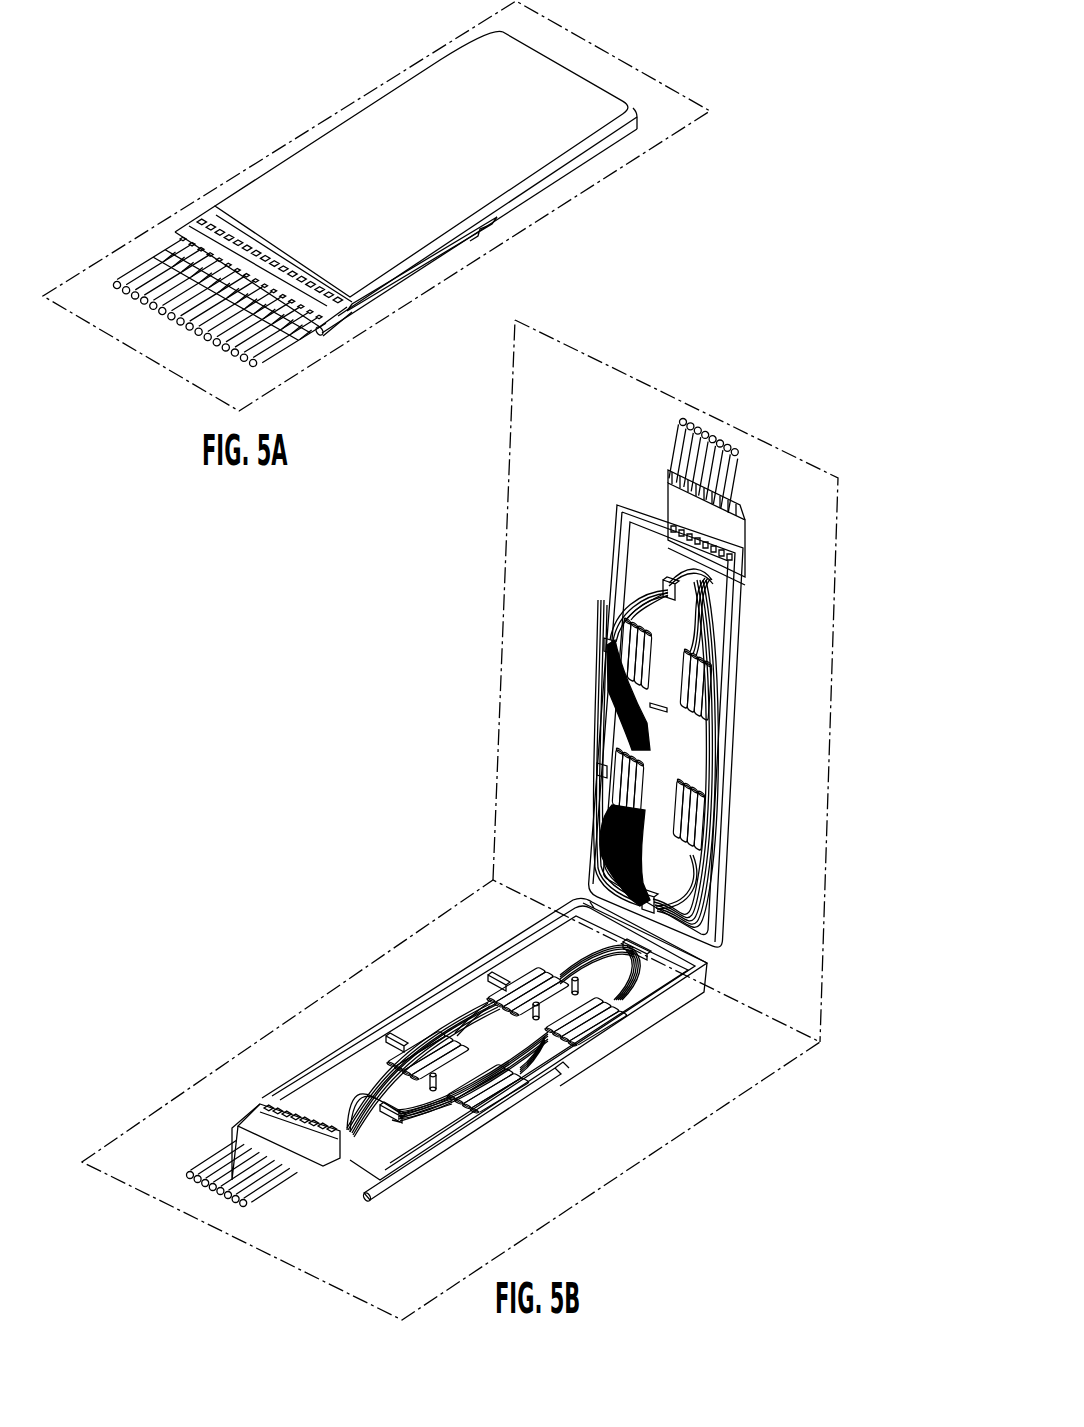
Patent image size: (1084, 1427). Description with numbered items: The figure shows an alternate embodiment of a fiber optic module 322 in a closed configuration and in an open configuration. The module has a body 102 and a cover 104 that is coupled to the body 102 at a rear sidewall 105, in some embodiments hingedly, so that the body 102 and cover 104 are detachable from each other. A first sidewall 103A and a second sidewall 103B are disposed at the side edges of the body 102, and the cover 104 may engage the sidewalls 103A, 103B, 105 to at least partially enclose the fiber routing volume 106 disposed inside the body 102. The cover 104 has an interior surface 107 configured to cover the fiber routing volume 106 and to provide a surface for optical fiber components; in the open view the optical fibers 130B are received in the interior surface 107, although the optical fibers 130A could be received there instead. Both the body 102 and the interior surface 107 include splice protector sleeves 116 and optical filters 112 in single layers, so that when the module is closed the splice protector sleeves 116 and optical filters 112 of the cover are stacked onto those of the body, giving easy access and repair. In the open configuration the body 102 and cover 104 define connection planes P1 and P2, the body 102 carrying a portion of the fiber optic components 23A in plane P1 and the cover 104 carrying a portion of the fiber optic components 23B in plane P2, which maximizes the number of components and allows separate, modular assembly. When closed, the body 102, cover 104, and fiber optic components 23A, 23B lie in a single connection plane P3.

In FIG. 5A, the fiber optic module 322 is at (339, 210).
In FIG. 5B, the fiber optic module 322 is at (574, 847).
In FIG. 5A, the cover 104 is at (406, 168).
In FIG. 5B, the cover 104 is at (603, 821).
In FIG. 5B, the interior surface 107 is at (620, 567).
In FIG. 5A, the rear sidewall 105 is at (422, 264).
In FIG. 5B, the rear sidewall 105 is at (690, 958).
In FIG. 5B, the body 102 is at (526, 1050).
In FIG. 5A, the fiber optic components 23A is at (123, 317).
In FIG. 5B, the fiber optic components 23A is at (207, 1193).
In FIG. 5A, the fiber optic components 23B is at (208, 359).
In FIG. 5B, the fiber optic components 23B is at (757, 453).
In FIG. 5B, the optical filters 112 is at (698, 685).
In FIG. 5B, the splice protector sleeves 116 is at (603, 773).
In FIG. 5B, the optical fibers 130A is at (400, 1122).
In FIG. 5B, the optical fibers 130B is at (710, 760).
In FIG. 5B, the first sidewall 103A is at (490, 1033).
In FIG. 5B, the second sidewall 103B is at (538, 942).
In FIG. 5B, the fiber routing volume 106 is at (487, 1023).
In FIG. 5B, the connection plane P1 is at (215, 1067).
In FIG. 5B, the connection plane P2 is at (690, 407).
In FIG. 5A, the connection plane P3 is at (667, 87).